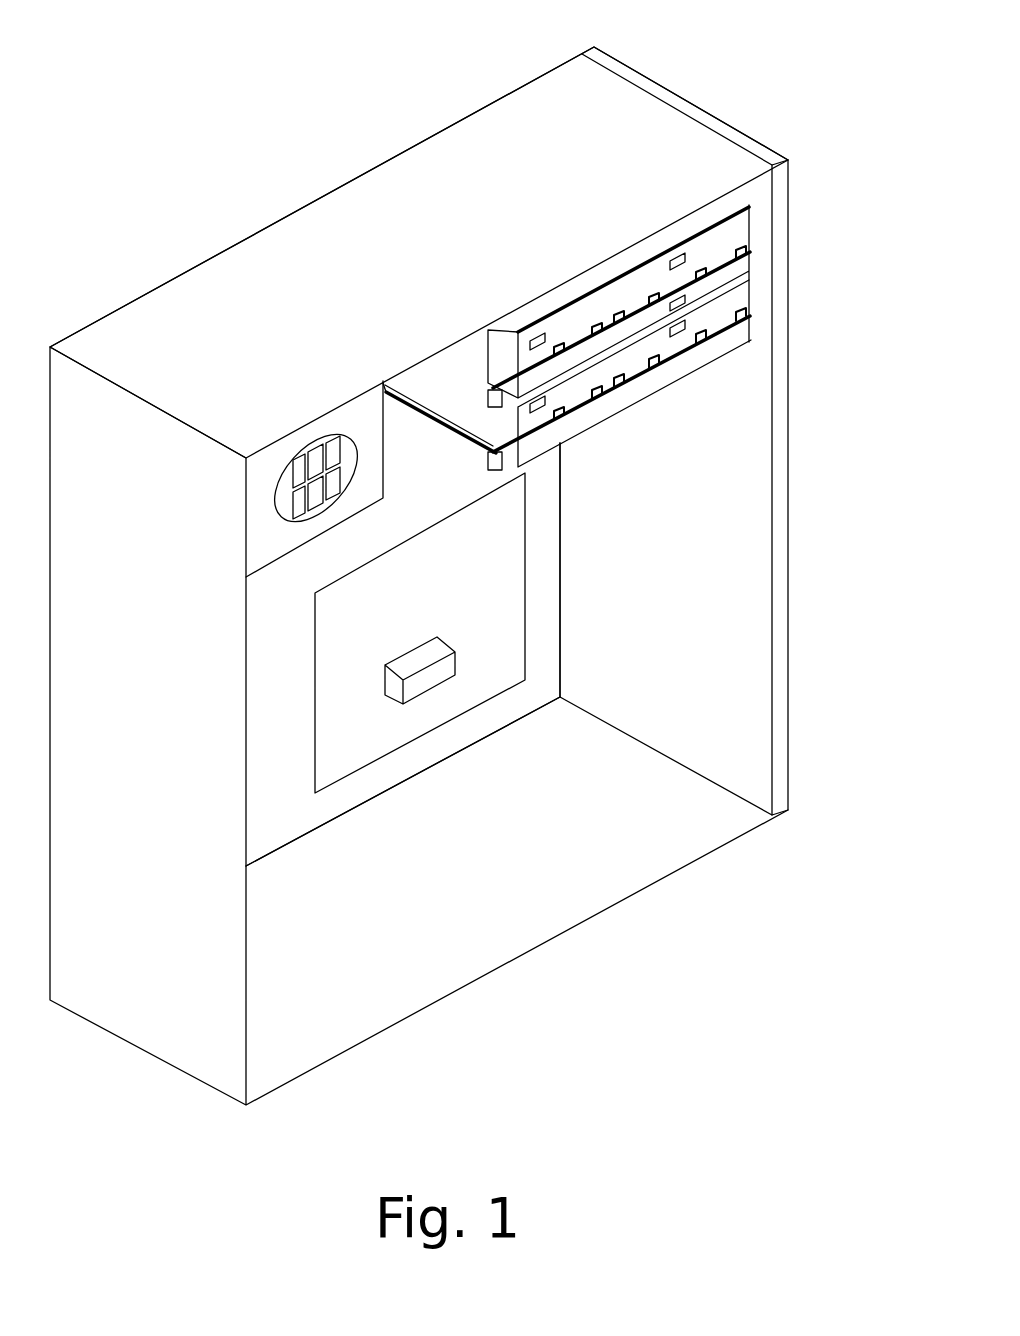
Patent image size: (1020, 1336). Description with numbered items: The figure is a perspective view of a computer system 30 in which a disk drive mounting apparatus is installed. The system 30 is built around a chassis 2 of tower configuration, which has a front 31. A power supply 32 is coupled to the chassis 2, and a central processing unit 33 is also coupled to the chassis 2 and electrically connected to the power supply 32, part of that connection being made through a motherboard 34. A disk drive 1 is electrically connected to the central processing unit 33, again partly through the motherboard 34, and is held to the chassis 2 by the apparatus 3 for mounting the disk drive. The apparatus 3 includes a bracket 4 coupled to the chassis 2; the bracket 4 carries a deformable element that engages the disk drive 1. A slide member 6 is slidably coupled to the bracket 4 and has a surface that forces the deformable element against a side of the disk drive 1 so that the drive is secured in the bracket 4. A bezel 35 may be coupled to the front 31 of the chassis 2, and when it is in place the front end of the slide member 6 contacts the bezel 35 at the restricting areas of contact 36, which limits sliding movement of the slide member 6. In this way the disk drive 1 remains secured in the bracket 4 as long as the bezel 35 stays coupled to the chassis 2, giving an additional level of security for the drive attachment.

The computer system 30 is at (320, 102).
The chassis 2 is at (393, 155).
The disk drive 1 is at (447, 392).
The power supply 32 is at (308, 482).
The slide member 6 is at (640, 305).
The restricting areas of contact 36 is at (753, 311).
The bracket 4 is at (700, 310).
The apparatus for mounting a disk drive 3 is at (697, 413).
The bezel 35 is at (780, 462).
The motherboard 34 is at (488, 593).
The central processing unit 33 is at (427, 677).
The front 31 is at (673, 473).